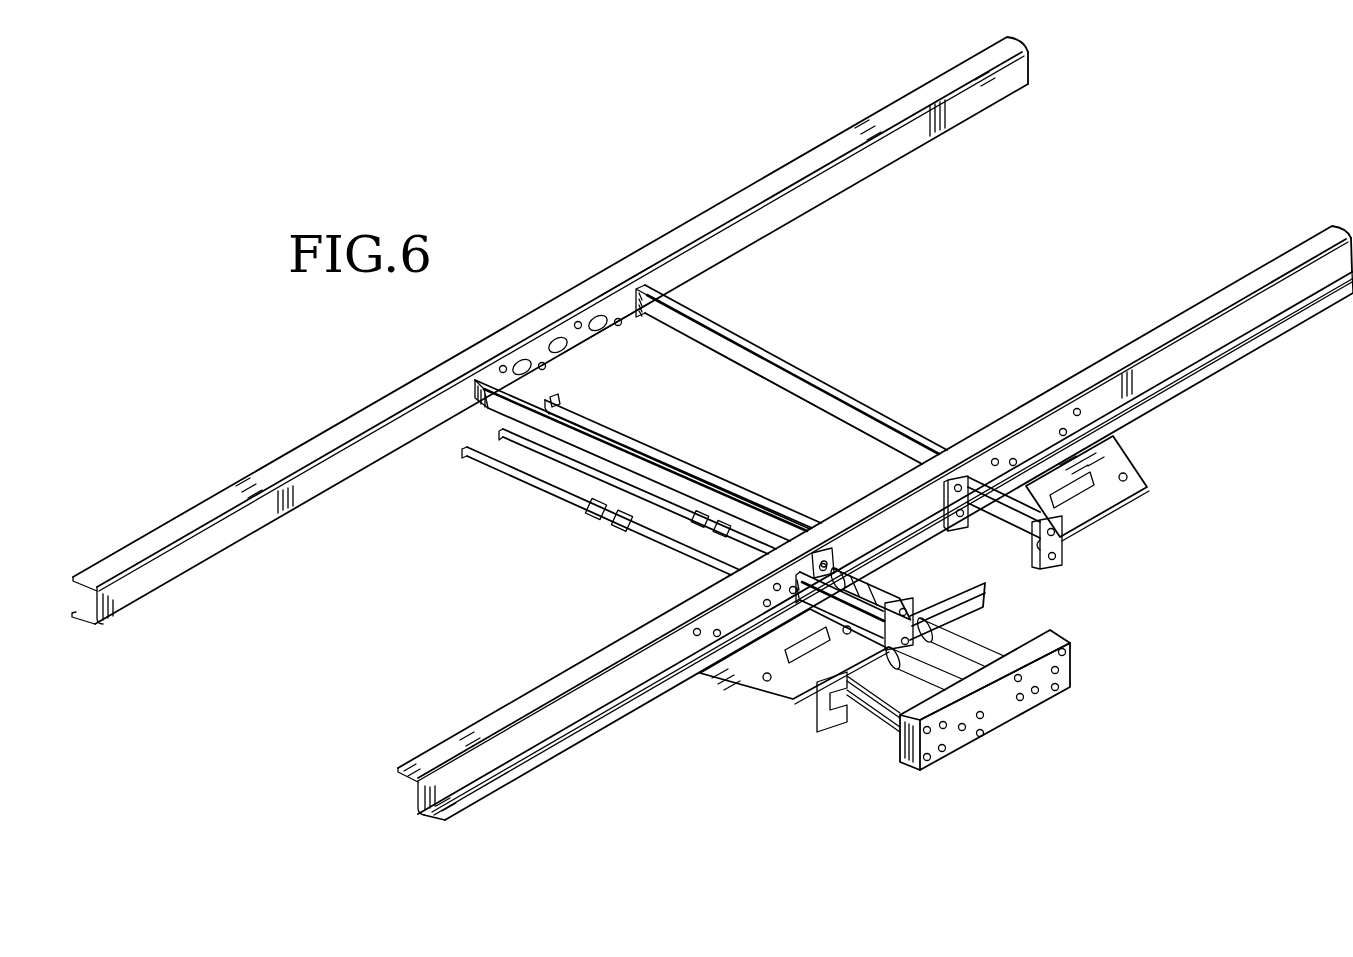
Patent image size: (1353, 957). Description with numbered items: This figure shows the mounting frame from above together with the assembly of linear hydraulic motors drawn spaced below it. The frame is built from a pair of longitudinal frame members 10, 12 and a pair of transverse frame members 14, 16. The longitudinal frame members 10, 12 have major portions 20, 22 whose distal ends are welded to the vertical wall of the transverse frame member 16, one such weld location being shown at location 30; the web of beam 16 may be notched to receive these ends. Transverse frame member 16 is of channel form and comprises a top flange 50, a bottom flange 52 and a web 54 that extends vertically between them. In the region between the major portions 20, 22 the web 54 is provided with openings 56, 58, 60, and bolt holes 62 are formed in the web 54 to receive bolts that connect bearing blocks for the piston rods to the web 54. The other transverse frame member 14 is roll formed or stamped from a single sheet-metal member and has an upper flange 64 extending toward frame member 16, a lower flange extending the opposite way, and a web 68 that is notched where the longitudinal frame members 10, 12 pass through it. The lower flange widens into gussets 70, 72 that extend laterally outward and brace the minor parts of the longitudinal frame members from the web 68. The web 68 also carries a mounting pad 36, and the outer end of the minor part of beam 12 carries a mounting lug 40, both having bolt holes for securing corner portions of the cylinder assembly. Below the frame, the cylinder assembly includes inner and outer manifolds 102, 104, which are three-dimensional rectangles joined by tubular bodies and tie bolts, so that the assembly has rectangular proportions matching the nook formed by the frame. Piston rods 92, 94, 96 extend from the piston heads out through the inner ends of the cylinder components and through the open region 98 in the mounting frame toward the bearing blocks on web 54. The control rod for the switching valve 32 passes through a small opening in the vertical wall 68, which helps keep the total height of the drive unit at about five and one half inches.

The longitudinal frame member 10 is at (704, 524).
The longitudinal frame member 12 is at (791, 374).
The transverse frame member 14 is at (875, 532).
The transverse frame member 16 is at (550, 360).
The major portion 20 is at (560, 445).
The major portion 22 is at (753, 347).
The distal end location 30 is at (626, 300).
The switching valve 32 is at (888, 540).
The mounting pad 36 is at (958, 524).
The mounting lug 40 is at (1060, 545).
The top flange 50 is at (243, 490).
The bottom flange 52 is at (85, 618).
The web 54 is at (231, 540).
The opening 56 is at (522, 358).
The opening 58 is at (558, 336).
The opening 60 is at (610, 327).
The bolt holes 62 is at (500, 365).
The upper flange 64 is at (468, 740).
The web 68 is at (612, 690).
The gusset 70 is at (748, 674).
The gusset 72 is at (1122, 490).
The piston rod 92 is at (680, 476).
The piston rod 94 is at (575, 475).
The piston rod 96 is at (578, 516).
The open region 98 is at (840, 460).
The inner manifold 102 is at (988, 586).
The outer manifold 104 is at (1005, 712).